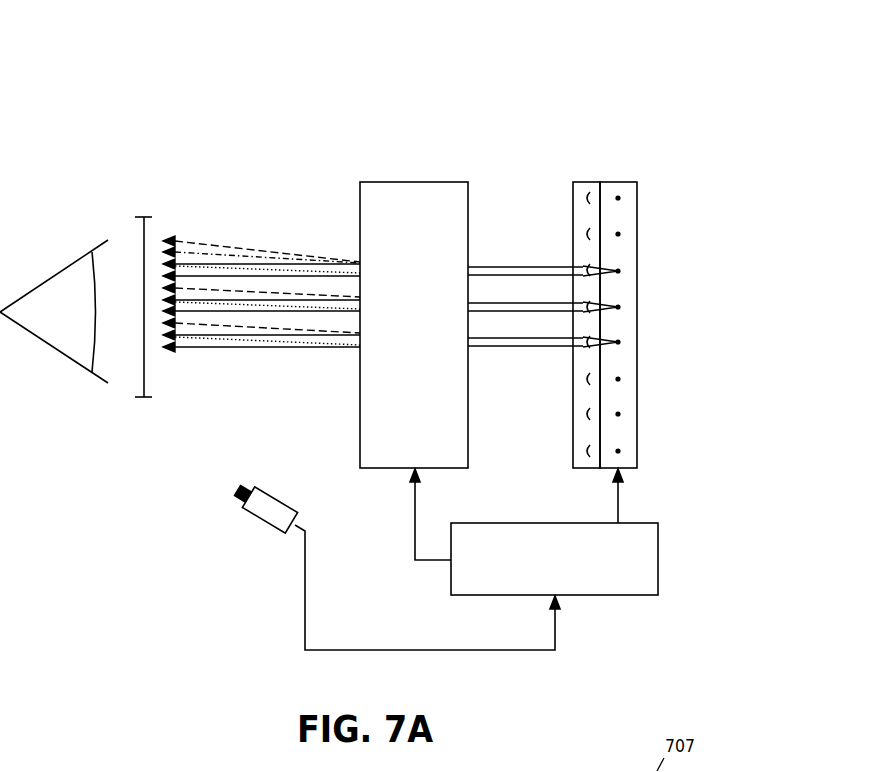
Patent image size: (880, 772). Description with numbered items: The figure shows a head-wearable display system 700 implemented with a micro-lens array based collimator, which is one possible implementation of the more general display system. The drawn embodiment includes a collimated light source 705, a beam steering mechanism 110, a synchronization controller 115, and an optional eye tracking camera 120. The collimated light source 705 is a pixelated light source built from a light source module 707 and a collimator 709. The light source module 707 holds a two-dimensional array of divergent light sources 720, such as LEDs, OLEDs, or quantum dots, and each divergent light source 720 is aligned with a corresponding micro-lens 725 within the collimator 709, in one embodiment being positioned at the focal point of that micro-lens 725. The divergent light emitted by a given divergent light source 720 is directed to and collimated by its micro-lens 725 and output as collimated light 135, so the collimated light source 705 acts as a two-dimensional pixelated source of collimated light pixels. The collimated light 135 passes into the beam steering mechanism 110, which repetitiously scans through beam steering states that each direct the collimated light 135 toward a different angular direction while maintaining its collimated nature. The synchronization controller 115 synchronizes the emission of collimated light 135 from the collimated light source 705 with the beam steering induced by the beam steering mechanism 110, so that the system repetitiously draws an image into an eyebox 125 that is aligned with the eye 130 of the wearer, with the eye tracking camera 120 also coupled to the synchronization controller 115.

The head-wearable display system 700 is at (213, 72).
The eyebox 125 is at (143, 216).
The eye 130 is at (73, 318).
The collimated light 135 is at (556, 267).
The beam steering mechanism 110 is at (430, 441).
The synchronization controller 115 is at (637, 581).
The eye tracking camera 120 is at (260, 522).
The collimated light source 705 is at (640, 108).
The collimator 709 is at (583, 181).
The light source module 707 is at (637, 260).
The divergent light source 720 is at (623, 413).
The micro-lens 725 is at (585, 450).